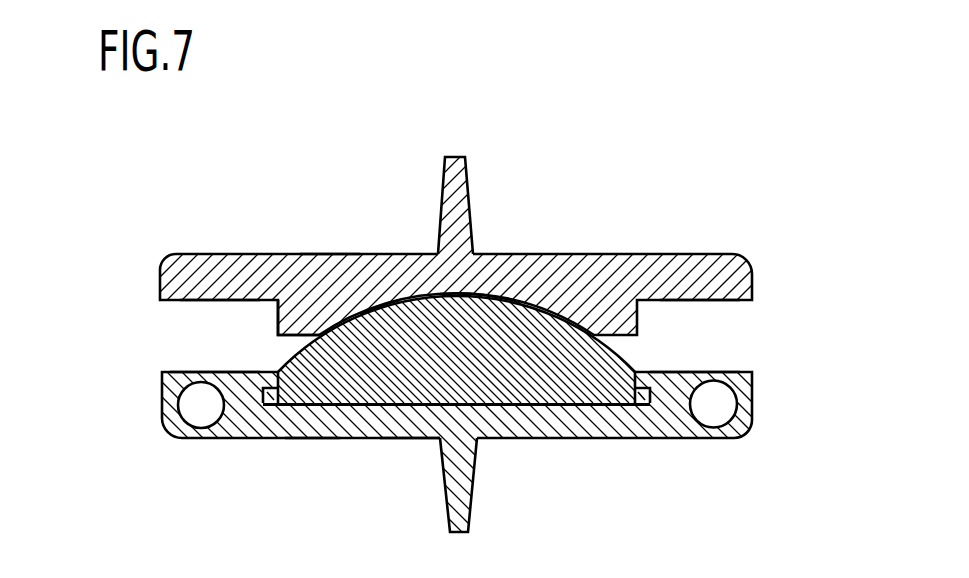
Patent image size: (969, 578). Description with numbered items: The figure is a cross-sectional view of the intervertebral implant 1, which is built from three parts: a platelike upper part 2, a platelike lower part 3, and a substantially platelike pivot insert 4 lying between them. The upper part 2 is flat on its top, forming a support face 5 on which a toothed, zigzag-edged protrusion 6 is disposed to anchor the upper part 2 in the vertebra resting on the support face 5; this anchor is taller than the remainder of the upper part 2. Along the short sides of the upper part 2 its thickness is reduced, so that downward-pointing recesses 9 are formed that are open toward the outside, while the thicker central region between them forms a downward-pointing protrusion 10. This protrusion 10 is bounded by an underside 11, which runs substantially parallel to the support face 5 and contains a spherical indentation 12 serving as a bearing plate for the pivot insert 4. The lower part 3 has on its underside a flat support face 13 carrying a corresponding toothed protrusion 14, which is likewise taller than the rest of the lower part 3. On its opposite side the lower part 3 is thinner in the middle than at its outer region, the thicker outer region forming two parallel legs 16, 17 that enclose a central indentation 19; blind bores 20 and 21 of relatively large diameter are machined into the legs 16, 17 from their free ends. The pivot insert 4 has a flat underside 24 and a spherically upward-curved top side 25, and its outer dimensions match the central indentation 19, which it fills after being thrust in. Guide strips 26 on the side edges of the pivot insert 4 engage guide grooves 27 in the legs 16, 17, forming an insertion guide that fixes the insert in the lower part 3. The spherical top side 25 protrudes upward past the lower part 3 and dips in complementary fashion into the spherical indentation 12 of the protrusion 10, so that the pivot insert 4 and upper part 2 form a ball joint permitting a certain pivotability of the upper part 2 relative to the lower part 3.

The intervertebral implant 1 is at (763, 300).
The upper part 2 is at (602, 225).
The lower part 3 is at (587, 440).
The pivot insert 4 is at (529, 320).
The support face 5 is at (327, 254).
The protrusion 6 is at (448, 186).
The recesses 9 is at (211, 302).
The protrusion 10 is at (290, 323).
The underside 11 is at (306, 333).
The spherical indentation 12 is at (389, 303).
The support face 13 is at (309, 409).
The protrusion 14 is at (468, 498).
The leg 16 is at (215, 384).
The leg 17 is at (667, 388).
The central indentation 19 is at (343, 400).
The blind bore 20 is at (180, 425).
The blind bore 21 is at (711, 425).
The underside 24 is at (420, 440).
The top side 25 is at (481, 298).
The guide strips 26 is at (266, 408).
The guide grooves 27 is at (275, 405).